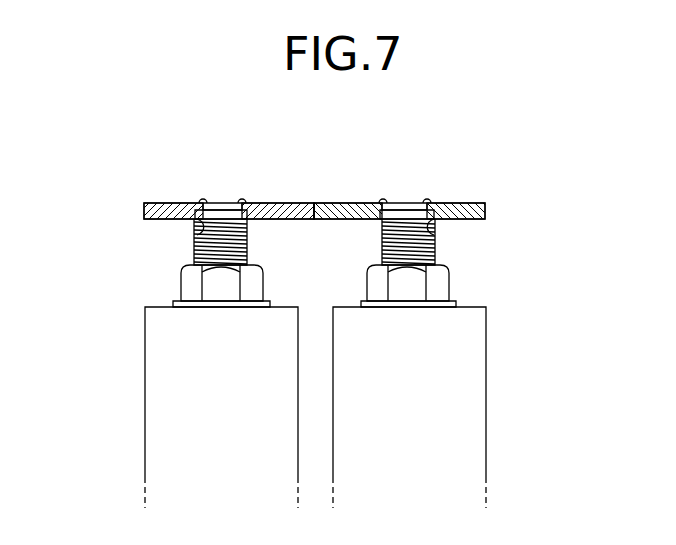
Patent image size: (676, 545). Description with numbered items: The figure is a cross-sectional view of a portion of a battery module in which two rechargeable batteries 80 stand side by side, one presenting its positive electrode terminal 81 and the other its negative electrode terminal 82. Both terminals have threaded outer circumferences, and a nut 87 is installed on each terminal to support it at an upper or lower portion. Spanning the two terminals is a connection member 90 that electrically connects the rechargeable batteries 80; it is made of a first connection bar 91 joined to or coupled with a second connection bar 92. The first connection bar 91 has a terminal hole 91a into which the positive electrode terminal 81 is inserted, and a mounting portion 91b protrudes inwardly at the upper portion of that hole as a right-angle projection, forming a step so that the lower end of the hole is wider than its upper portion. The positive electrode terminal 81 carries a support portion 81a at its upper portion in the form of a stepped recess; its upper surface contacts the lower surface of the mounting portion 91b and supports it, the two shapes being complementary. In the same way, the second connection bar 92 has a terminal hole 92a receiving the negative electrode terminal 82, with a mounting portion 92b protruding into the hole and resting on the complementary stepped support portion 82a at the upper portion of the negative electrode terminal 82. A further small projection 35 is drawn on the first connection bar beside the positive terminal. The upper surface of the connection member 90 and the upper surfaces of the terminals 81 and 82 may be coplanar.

The connection member 90 is at (313, 170).
The first connection bar 91 is at (159, 202).
The second connection bar 92 is at (468, 202).
The terminal hole 91a is at (198, 233).
The terminal hole 92a is at (436, 236).
The mounting portion 91b is at (203, 198).
The mounting portion 92b is at (427, 198).
The coupling protrusion 35 is at (242, 198).
The positive electrode terminal 81 is at (222, 202).
The support portion 81a is at (247, 202).
The negative electrode terminal 82 is at (405, 202).
The support portion 82a is at (382, 200).
The nut 87 is at (188, 283).
The rechargeable battery 80 is at (136, 408).